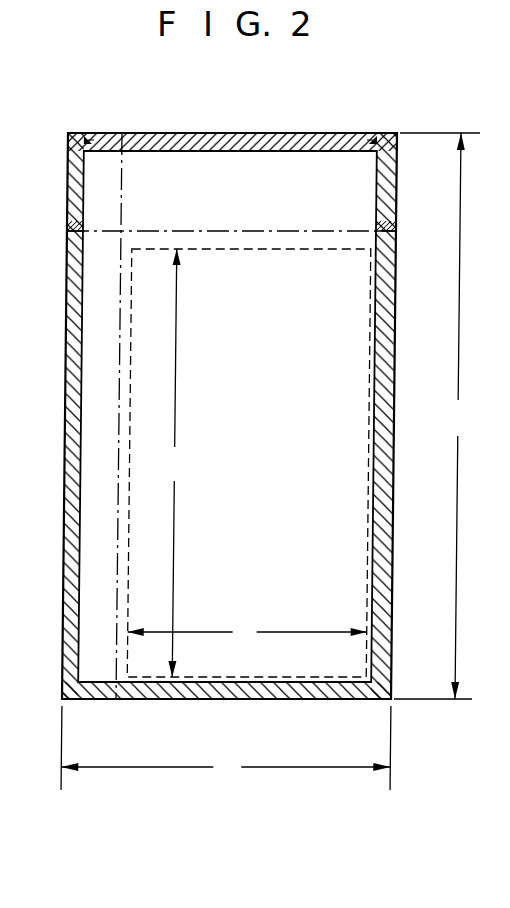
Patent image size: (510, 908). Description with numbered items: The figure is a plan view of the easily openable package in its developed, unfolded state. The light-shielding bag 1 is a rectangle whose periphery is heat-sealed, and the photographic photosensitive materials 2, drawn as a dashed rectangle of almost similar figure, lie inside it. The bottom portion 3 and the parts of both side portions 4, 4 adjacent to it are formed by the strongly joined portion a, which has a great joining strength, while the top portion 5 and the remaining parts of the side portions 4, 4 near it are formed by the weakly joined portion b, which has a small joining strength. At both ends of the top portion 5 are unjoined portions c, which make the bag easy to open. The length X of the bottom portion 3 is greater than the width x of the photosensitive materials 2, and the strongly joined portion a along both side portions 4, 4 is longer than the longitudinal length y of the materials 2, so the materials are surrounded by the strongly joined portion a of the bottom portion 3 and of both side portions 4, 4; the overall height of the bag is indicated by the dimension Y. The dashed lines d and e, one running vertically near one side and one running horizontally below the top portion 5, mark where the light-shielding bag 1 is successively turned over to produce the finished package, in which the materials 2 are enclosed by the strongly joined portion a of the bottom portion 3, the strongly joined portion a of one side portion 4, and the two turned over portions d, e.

The light-shielding bag 1 is at (331, 133).
The photographic photosensitive materials 2 is at (352, 296).
The bottom portion 3 is at (182, 700).
The side portion 4 is at (65, 493).
The top portion 5 is at (214, 133).
The strongly joined portion a is at (65, 421).
The weakly joined portion b is at (268, 133).
The unjoined portion c is at (83, 133).
The turned over portion d is at (121, 324).
The turned over portion e is at (190, 230).
The width of the photographic photosensitive materials x is at (247, 631).
The longitudinal length of the photographic photosensitive materials y is at (174, 463).
The length of the bottom portion X is at (226, 748).
The outer height dimension Y is at (437, 416).